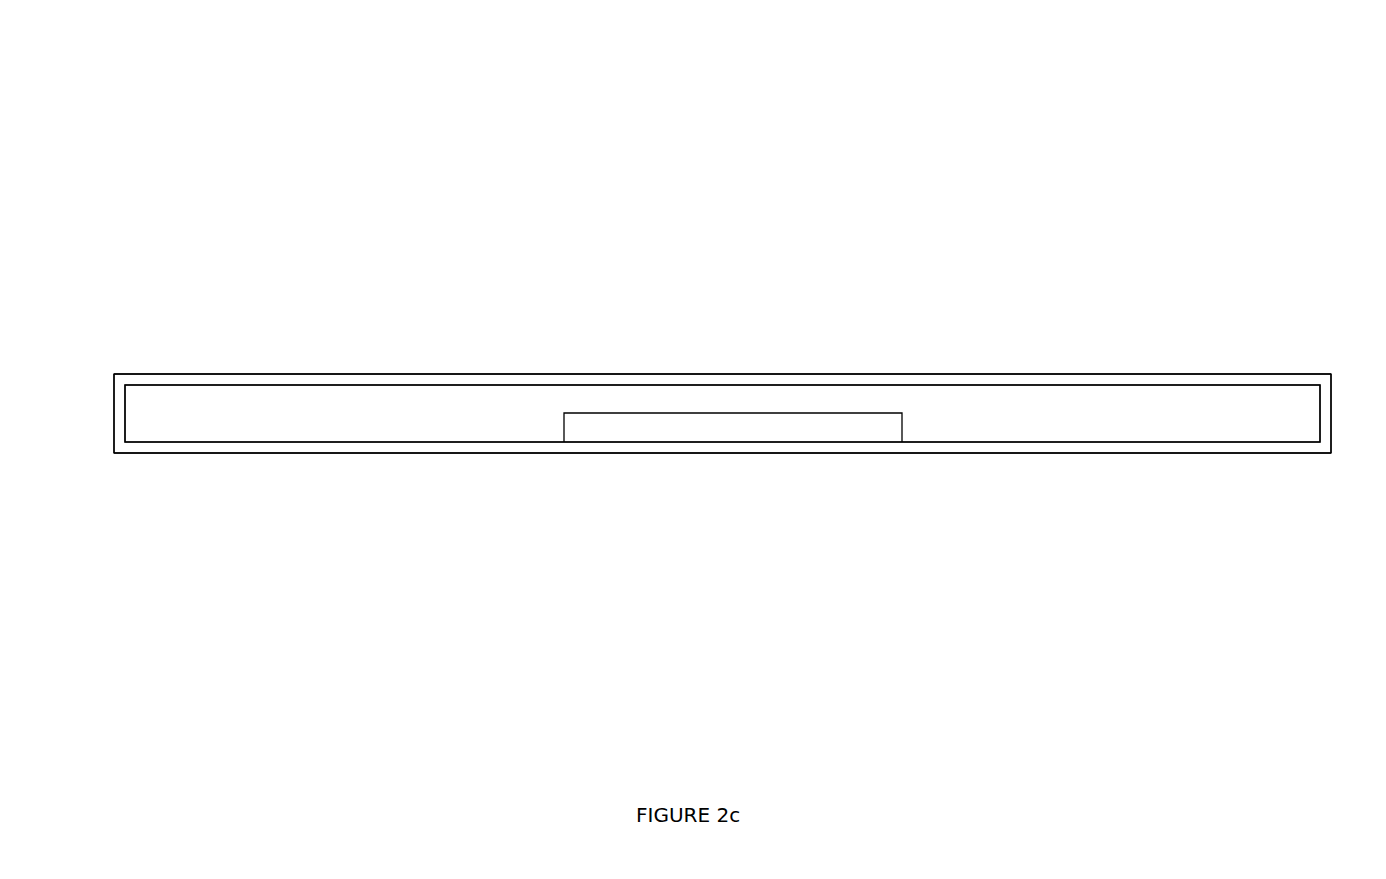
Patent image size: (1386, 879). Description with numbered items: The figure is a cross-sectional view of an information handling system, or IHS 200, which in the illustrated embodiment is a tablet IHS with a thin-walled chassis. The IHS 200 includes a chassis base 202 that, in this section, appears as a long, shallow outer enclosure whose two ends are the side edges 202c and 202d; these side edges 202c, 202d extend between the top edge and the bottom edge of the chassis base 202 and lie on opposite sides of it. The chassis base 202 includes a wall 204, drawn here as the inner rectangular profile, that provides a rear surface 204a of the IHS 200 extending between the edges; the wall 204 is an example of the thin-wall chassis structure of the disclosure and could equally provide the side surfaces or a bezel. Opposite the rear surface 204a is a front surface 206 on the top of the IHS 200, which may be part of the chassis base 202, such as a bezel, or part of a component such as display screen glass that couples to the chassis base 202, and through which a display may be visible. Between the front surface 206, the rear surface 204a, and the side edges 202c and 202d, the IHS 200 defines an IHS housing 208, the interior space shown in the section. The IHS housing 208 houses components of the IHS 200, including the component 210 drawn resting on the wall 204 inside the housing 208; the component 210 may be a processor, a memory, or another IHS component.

The IHS 200 is at (1095, 170).
The chassis base 202 is at (114, 375).
The side edge 202c is at (114, 417).
The side edge 202d is at (1331, 413).
The wall 204 is at (420, 445).
The rear surface 204a is at (722, 453).
The front surface 206 is at (722, 374).
The IHS housing 208 is at (310, 427).
The component 210 is at (847, 428).